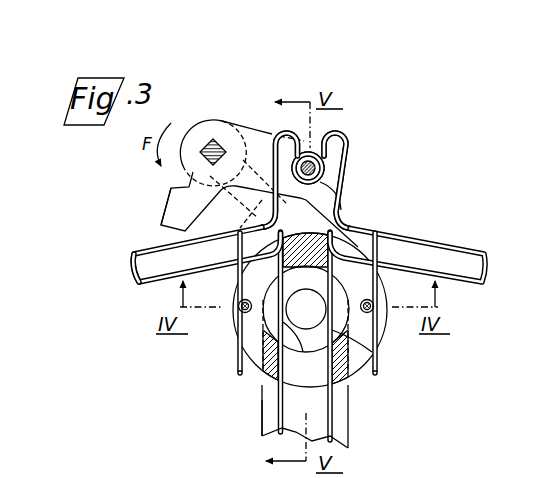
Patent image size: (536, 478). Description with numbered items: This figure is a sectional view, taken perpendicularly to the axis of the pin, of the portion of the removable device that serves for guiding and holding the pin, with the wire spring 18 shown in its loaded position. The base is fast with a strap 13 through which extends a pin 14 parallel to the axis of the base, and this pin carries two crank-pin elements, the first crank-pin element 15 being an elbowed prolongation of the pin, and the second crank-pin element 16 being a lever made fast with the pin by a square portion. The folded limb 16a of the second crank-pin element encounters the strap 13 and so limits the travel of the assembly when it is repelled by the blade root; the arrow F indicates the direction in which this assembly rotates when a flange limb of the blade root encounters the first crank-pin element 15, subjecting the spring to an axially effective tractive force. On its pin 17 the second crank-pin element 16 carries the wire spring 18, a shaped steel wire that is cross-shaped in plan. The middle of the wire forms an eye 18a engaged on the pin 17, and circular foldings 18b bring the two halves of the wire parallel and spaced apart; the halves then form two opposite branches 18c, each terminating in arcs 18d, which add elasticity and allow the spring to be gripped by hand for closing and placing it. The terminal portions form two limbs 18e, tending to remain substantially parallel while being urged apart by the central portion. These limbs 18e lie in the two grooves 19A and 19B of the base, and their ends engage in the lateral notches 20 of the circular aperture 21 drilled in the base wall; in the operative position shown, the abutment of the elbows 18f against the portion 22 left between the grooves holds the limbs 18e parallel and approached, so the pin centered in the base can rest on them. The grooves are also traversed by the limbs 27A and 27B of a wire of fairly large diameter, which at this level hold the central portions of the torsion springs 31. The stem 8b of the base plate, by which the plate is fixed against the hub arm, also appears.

The strap 13 is at (224, 250).
The pin 14 is at (214, 139).
The crank-pin element 15 is at (246, 212).
The crank-pin element 16 is at (305, 140).
The folded limb 16a is at (176, 206).
The pin 17 is at (317, 167).
The wire spring 18 is at (341, 196).
The eye 18a is at (323, 180).
The circular foldings 18b is at (374, 136).
The branches 18c is at (422, 235).
The arcs 18d is at (134, 270).
The limbs 18e is at (283, 327).
The elbows 18f is at (384, 278).
The groove 19A is at (359, 330).
The groove 19B is at (255, 326).
The lateral notches 20 is at (272, 393).
The circular aperture 21 is at (301, 385).
The portion 22 is at (312, 233).
The limb 27A is at (374, 311).
The limb 27B is at (239, 305).
The torsion springs 31 is at (237, 363).
The stem 8b is at (346, 425).